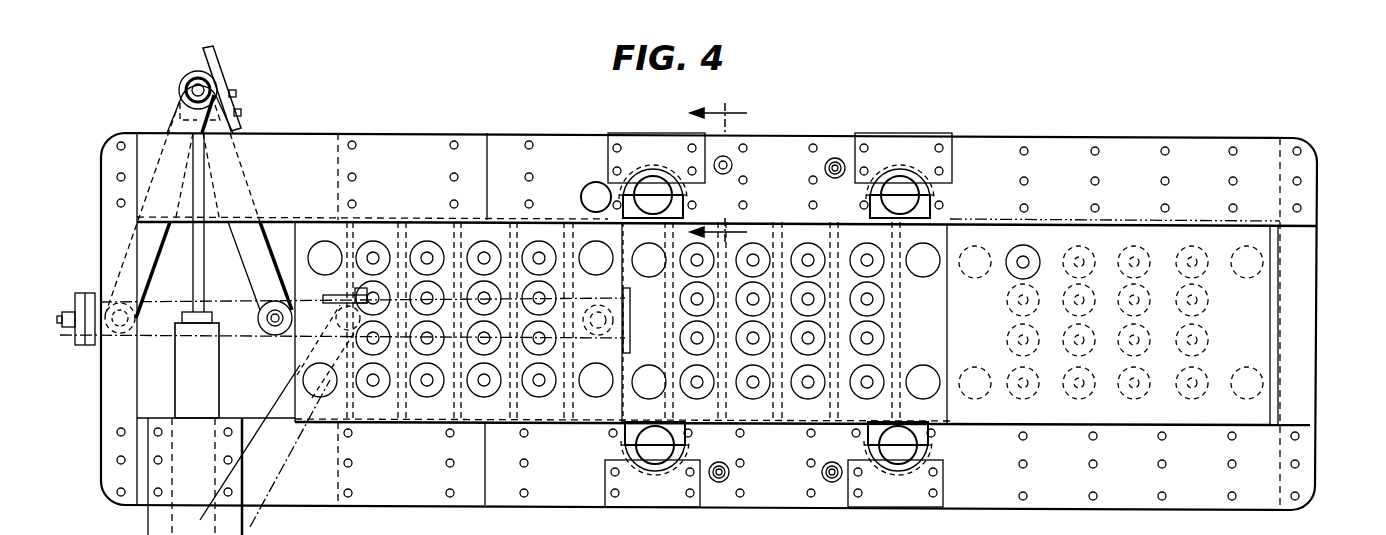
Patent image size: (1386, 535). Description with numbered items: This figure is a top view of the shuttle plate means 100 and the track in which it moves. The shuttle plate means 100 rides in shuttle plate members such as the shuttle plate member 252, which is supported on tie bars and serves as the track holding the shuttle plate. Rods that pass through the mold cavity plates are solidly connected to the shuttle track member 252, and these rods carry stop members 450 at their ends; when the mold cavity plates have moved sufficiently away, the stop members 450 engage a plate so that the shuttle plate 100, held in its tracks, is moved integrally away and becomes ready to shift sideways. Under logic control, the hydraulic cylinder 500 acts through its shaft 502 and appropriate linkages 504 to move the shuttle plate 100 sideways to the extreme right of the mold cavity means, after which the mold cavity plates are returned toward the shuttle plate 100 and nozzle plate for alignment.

The shuttle plate means 100 is at (293, 400).
The shuttle plate member 252 is at (1312, 143).
The stop members 450 is at (732, 164).
The hydraulic cylinder 500 is at (222, 357).
The shaft 502 is at (235, 235).
The linkages 504 is at (157, 249).